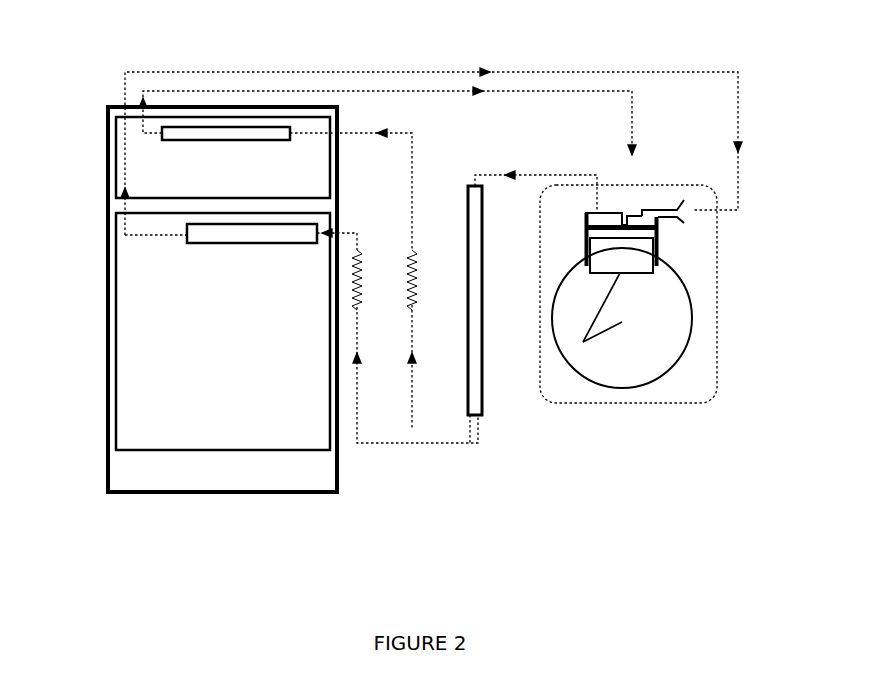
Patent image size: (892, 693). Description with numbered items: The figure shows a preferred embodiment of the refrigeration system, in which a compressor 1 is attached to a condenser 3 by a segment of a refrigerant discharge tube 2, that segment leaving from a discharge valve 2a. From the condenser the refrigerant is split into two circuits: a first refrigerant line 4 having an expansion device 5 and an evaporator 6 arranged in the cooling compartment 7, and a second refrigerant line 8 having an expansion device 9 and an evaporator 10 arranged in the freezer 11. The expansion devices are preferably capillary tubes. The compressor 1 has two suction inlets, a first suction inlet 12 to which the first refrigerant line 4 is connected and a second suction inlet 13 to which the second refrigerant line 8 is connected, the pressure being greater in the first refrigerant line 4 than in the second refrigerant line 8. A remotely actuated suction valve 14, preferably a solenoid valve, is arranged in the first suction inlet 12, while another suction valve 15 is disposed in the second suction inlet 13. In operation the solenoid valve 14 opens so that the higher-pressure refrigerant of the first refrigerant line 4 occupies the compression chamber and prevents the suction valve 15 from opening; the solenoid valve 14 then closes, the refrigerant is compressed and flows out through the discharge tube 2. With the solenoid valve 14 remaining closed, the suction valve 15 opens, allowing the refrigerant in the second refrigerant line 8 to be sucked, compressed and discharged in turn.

The compressor 1 is at (685, 378).
The refrigerant discharge tube 2 is at (565, 173).
The discharge valve 2a is at (607, 214).
The condenser 3 is at (483, 352).
The first refrigerant line 4 is at (538, 72).
The expansion device 5 is at (358, 247).
The evaporator 6 is at (292, 244).
The cooling compartment 7 is at (245, 433).
The second refrigerant line 8 is at (518, 95).
The expansion device 9 is at (413, 250).
The evaporator 10 is at (283, 134).
The freezer 11 is at (138, 143).
The first suction inlet 12 is at (645, 221).
The second suction inlet 13 is at (631, 226).
The remotely actuated suction valve 14 is at (658, 240).
The suction valve 15 is at (612, 248).